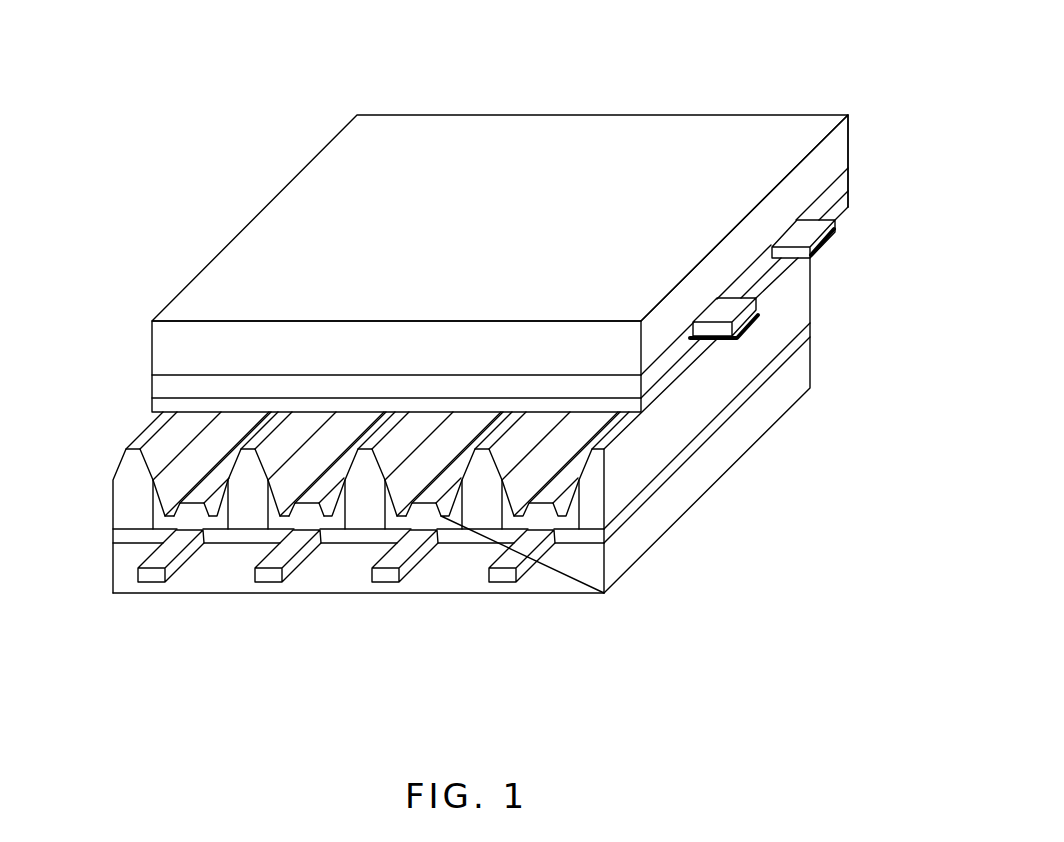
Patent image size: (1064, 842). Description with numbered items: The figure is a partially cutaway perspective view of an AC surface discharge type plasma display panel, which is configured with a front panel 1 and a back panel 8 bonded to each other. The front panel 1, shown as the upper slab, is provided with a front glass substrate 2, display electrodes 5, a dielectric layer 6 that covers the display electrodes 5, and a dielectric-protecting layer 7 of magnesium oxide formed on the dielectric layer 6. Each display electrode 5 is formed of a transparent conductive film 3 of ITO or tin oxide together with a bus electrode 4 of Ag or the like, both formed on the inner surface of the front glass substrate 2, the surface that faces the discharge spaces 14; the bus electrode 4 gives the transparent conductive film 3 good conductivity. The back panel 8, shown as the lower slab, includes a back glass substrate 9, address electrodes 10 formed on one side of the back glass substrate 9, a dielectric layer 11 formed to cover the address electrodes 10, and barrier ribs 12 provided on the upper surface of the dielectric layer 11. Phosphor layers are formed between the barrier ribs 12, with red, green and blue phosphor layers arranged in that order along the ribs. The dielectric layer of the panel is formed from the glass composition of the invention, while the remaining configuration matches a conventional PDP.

The front panel 1 is at (412, 148).
The front glass substrate 2 is at (843, 139).
The transparent conductive film 3 is at (838, 233).
The bus electrode 4 is at (833, 239).
The display electrode 5 is at (843, 263).
The dielectric layer 6 is at (160, 387).
The dielectric-protecting layer 7 is at (150, 409).
The back panel 8 is at (627, 597).
The back glass substrate 9 is at (719, 445).
The address electrode 10 is at (524, 565).
The dielectric layer 11 is at (769, 372).
The barrier rib 12 is at (128, 503).
The discharge space 14 is at (218, 432).